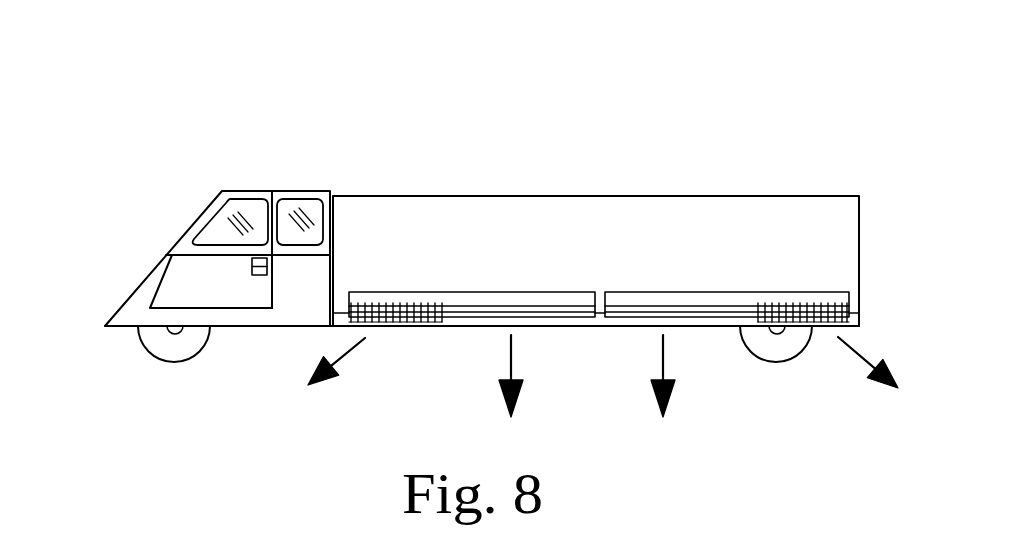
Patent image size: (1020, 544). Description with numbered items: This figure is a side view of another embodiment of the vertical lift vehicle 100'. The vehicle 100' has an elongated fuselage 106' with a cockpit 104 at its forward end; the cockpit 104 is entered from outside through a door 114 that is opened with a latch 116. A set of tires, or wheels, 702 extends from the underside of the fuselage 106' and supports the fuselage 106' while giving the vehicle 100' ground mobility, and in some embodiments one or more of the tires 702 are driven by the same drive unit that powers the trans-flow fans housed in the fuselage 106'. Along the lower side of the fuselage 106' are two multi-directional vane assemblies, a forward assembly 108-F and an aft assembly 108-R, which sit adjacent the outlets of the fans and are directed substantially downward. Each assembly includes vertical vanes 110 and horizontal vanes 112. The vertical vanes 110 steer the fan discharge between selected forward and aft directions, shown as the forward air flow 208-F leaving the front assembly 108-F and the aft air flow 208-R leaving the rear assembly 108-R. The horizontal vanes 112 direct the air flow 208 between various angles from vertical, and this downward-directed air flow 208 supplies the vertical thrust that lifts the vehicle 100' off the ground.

The vertical lift vehicle 100' is at (455, 229).
The cockpit 104 is at (261, 191).
The fuselage 106' is at (596, 231).
The forward multi-directional vane assembly 108-F is at (447, 292).
The aft multi-directional vane assembly 108-R is at (703, 292).
The vertical vanes 110 is at (392, 303).
The horizontal vanes 112 is at (643, 312).
The door 114 is at (152, 293).
The latch 116 is at (259, 276).
The tires 702 is at (172, 362).
The forward air flow 208-F is at (343, 359).
The aft air flow 208-R is at (903, 325).
The air flow 208 is at (663, 361).